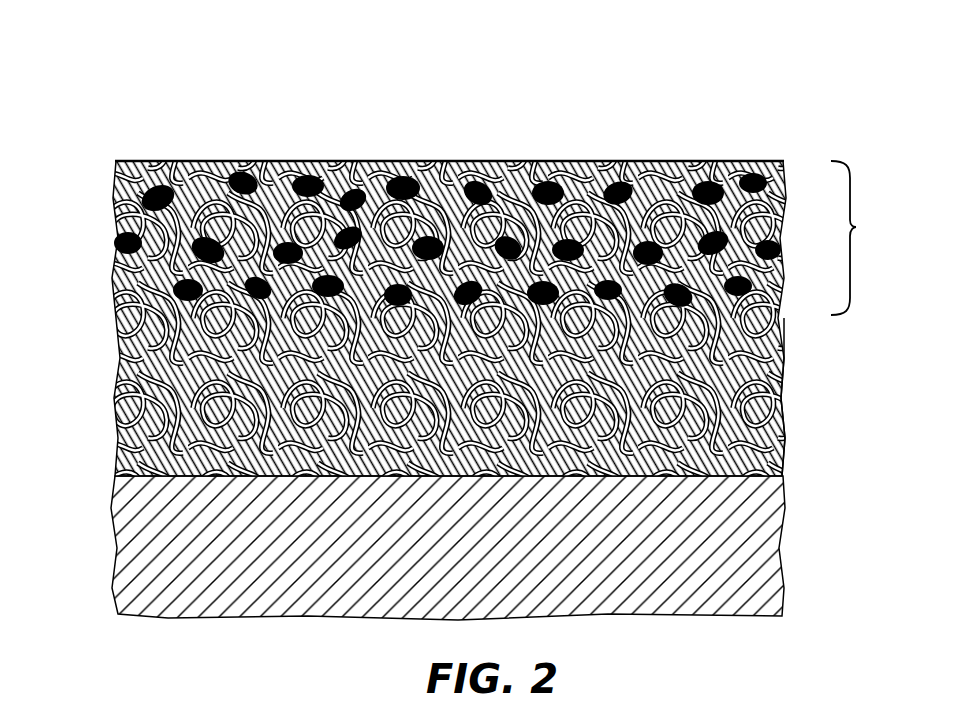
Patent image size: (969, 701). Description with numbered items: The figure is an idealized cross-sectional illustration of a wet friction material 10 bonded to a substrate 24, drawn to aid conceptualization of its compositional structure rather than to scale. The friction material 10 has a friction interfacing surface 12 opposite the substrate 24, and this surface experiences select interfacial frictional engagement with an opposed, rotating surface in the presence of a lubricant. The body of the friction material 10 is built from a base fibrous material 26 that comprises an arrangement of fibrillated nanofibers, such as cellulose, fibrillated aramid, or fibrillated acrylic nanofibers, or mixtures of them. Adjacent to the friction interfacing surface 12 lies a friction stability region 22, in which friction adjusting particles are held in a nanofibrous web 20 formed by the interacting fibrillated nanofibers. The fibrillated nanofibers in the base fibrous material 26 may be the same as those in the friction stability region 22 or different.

The wet friction material 10 is at (475, 334).
The friction interfacing surface 12 is at (476, 279).
The nanofibrous web 20 is at (742, 236).
The friction stability region 22 is at (849, 219).
The substrate 24 is at (743, 538).
The base fibrous material 26 is at (786, 396).